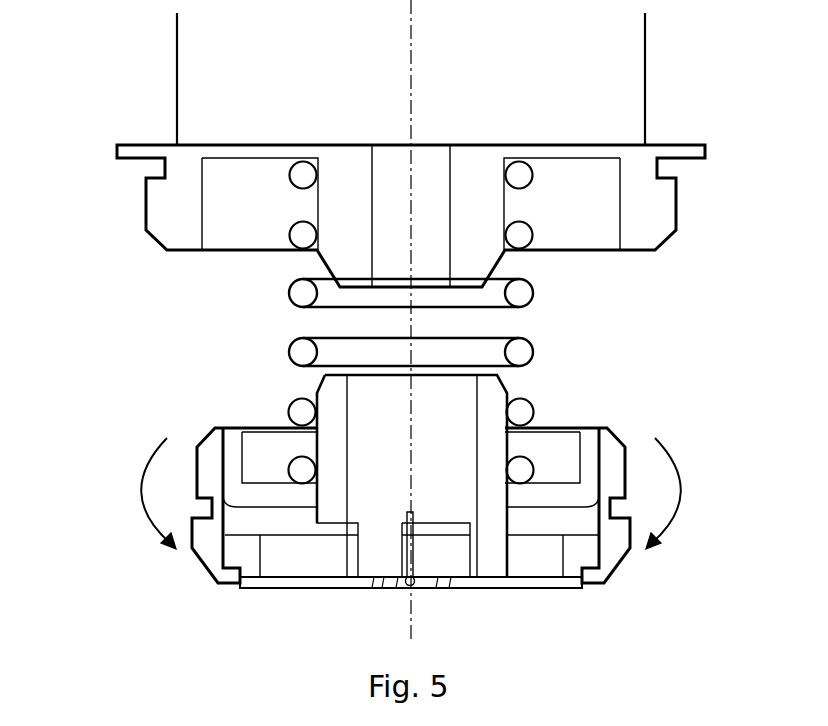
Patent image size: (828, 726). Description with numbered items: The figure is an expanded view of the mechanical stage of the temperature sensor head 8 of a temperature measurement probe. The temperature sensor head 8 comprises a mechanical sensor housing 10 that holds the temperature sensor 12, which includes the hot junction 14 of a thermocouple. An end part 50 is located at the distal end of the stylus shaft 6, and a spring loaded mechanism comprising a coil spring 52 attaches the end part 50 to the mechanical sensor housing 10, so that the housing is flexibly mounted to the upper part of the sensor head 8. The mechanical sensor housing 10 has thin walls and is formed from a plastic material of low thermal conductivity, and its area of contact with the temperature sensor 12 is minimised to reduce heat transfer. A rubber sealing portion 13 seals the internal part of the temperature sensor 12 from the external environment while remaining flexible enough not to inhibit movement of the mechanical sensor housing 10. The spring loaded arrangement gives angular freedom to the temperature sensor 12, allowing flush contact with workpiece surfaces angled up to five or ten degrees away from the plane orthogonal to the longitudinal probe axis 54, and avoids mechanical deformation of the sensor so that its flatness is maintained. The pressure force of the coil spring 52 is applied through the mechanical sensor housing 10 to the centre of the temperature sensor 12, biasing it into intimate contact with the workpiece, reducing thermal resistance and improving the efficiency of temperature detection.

The stylus shaft 6 is at (340, 74).
The temperature sensor head 8 is at (131, 347).
The mechanical sensor housing 10 is at (486, 454).
The temperature sensor 12 is at (467, 582).
The rubber sealing portion 13 is at (211, 548).
The hot junction 14 is at (407, 547).
The end part 50 is at (675, 235).
The coil spring 52 is at (534, 293).
The longitudinal probe axis 54 is at (413, 82).